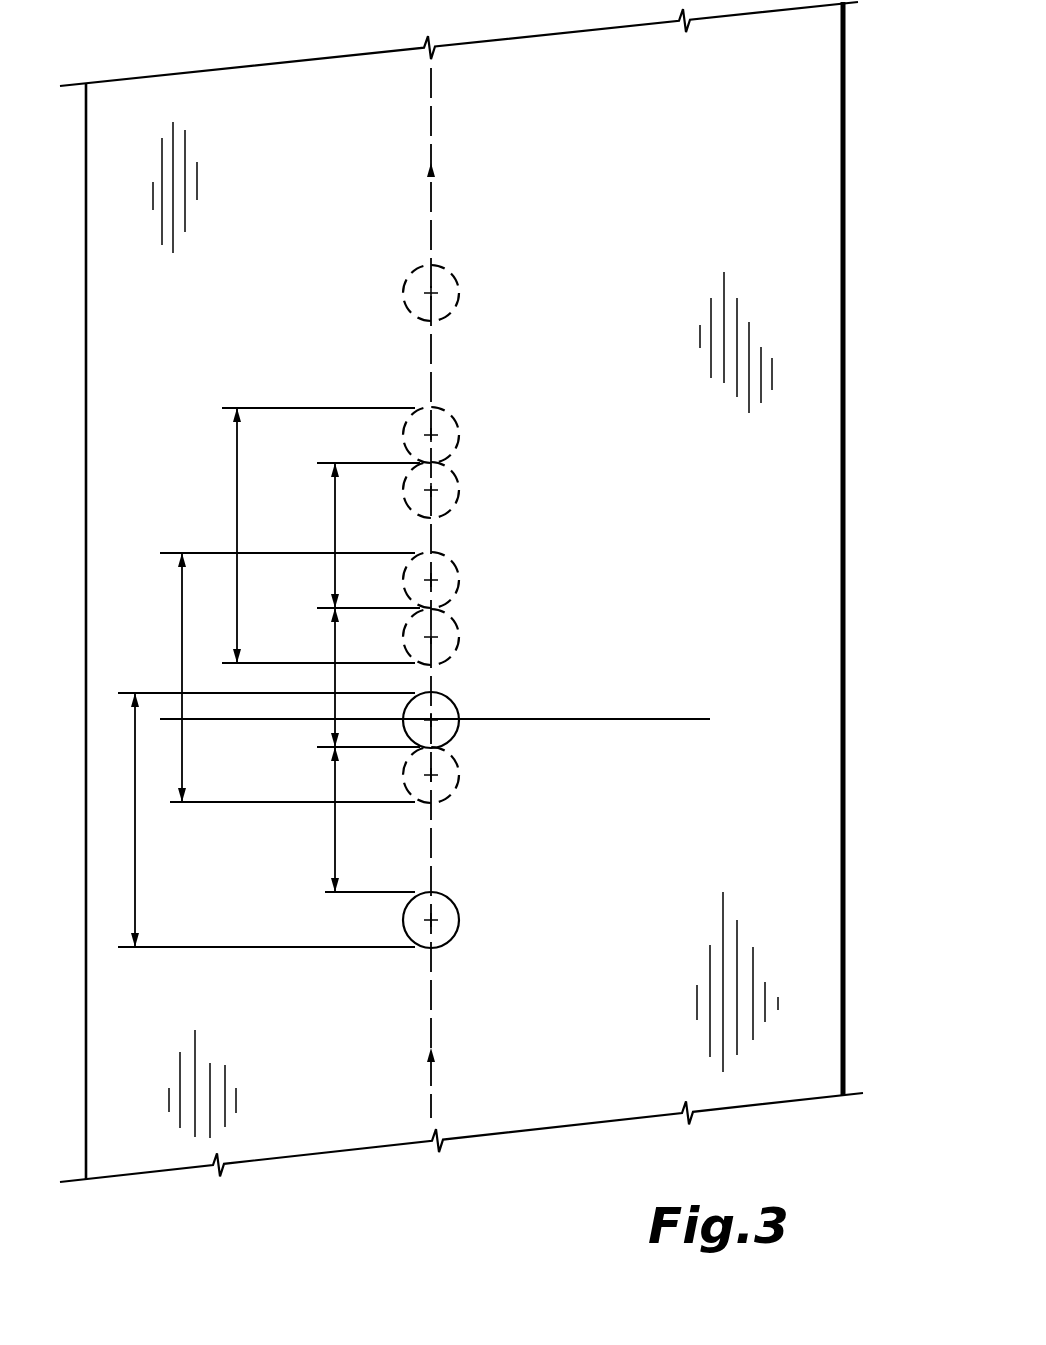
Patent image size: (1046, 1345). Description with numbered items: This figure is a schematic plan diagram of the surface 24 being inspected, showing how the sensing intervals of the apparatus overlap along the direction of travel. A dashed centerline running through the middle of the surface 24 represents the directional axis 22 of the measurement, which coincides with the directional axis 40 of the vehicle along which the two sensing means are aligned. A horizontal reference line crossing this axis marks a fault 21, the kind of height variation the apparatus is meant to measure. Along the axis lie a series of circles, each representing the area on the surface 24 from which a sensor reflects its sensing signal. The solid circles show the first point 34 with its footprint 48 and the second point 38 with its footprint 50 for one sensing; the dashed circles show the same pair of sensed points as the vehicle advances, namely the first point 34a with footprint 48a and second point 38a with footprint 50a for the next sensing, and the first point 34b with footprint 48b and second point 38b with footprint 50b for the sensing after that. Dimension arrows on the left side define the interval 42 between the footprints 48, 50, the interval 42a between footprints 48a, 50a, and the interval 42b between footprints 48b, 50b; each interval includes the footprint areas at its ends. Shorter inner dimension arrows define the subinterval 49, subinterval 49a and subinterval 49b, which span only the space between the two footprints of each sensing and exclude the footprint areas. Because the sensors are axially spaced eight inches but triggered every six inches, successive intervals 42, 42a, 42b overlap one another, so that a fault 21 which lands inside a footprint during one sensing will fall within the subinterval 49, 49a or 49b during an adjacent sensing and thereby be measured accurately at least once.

The directional axis 22 is at (486, 593).
The directional axis of the vehicle 40 is at (431, 120).
The surface 24 is at (689, 226).
The fault 21 is at (659, 719).
The second point 38b is at (507, 434).
The footprint 50b is at (458, 440).
The second point 38a is at (502, 571).
The footprint 50a is at (457, 577).
The first point 34b is at (502, 635).
The footprint 48b is at (453, 640).
The second point 38 is at (493, 728).
The footprint 50 is at (443, 733).
The first point 34a is at (497, 794).
The footprint 48a is at (443, 790).
The first point 34 is at (492, 931).
The footprint 48 is at (443, 934).
The interval 42b is at (237, 452).
The subinterval 49b is at (335, 515).
The interval 42a is at (182, 607).
The subinterval 49a is at (335, 638).
The subinterval 49 is at (337, 855).
The interval 42 is at (135, 902).